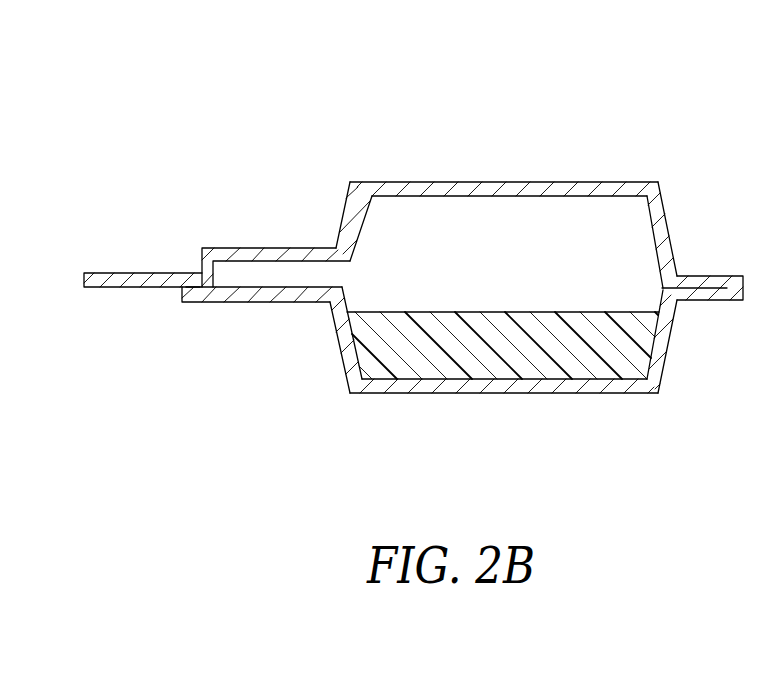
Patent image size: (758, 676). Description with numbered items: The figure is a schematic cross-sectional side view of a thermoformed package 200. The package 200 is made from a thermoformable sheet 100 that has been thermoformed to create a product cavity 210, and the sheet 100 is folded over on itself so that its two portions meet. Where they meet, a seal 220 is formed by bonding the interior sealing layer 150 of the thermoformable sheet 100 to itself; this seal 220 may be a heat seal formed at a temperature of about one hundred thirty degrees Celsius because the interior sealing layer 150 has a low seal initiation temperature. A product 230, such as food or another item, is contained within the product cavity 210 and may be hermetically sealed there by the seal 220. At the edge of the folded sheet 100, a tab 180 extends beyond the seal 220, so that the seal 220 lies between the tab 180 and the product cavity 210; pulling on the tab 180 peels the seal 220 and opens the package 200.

The thermoformed package 200 is at (633, 120).
The thermoformable sheet 100 is at (347, 352).
The interior sealing layer 150 is at (355, 237).
The tab 180 is at (183, 258).
The product cavity 210 is at (449, 214).
The seal 220 is at (193, 273).
The product 230 is at (528, 361).